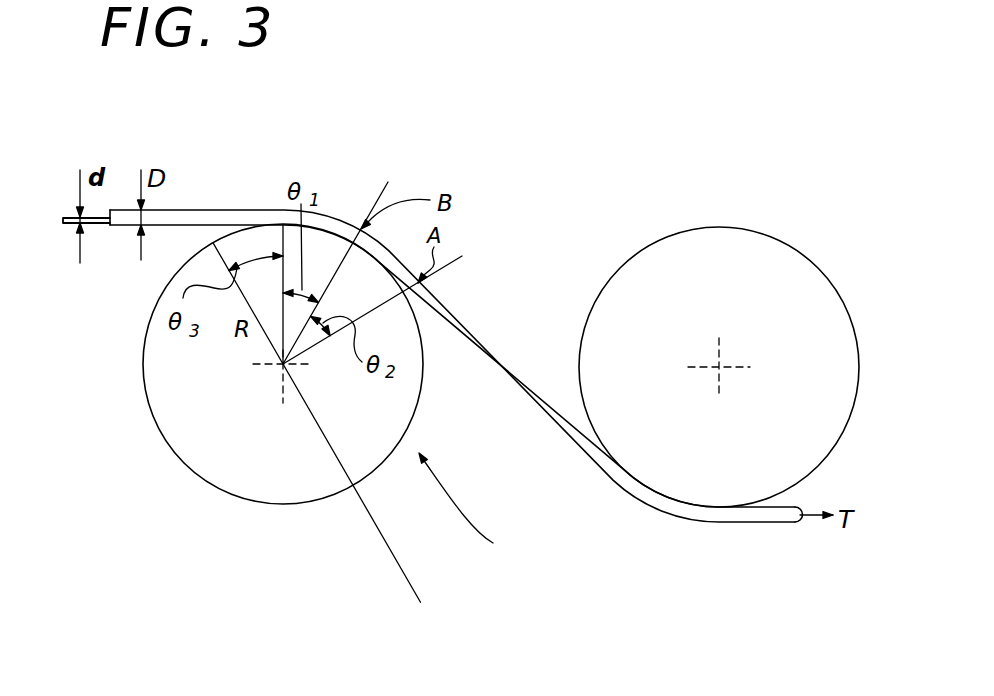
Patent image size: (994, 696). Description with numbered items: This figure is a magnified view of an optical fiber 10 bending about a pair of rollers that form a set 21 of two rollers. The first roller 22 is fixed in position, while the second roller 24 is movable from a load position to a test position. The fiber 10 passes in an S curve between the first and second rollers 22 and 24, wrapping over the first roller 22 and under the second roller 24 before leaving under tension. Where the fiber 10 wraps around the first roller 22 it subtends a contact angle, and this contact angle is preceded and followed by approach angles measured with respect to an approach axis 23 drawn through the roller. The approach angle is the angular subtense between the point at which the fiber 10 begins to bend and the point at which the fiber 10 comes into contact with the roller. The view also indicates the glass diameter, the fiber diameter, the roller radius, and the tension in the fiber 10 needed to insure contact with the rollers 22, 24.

The fiber 10 is at (500, 357).
The set of two rollers 21 is at (476, 507).
The first roller 22 is at (185, 470).
The approach axis 23 is at (386, 535).
The second roller 24 is at (745, 228).